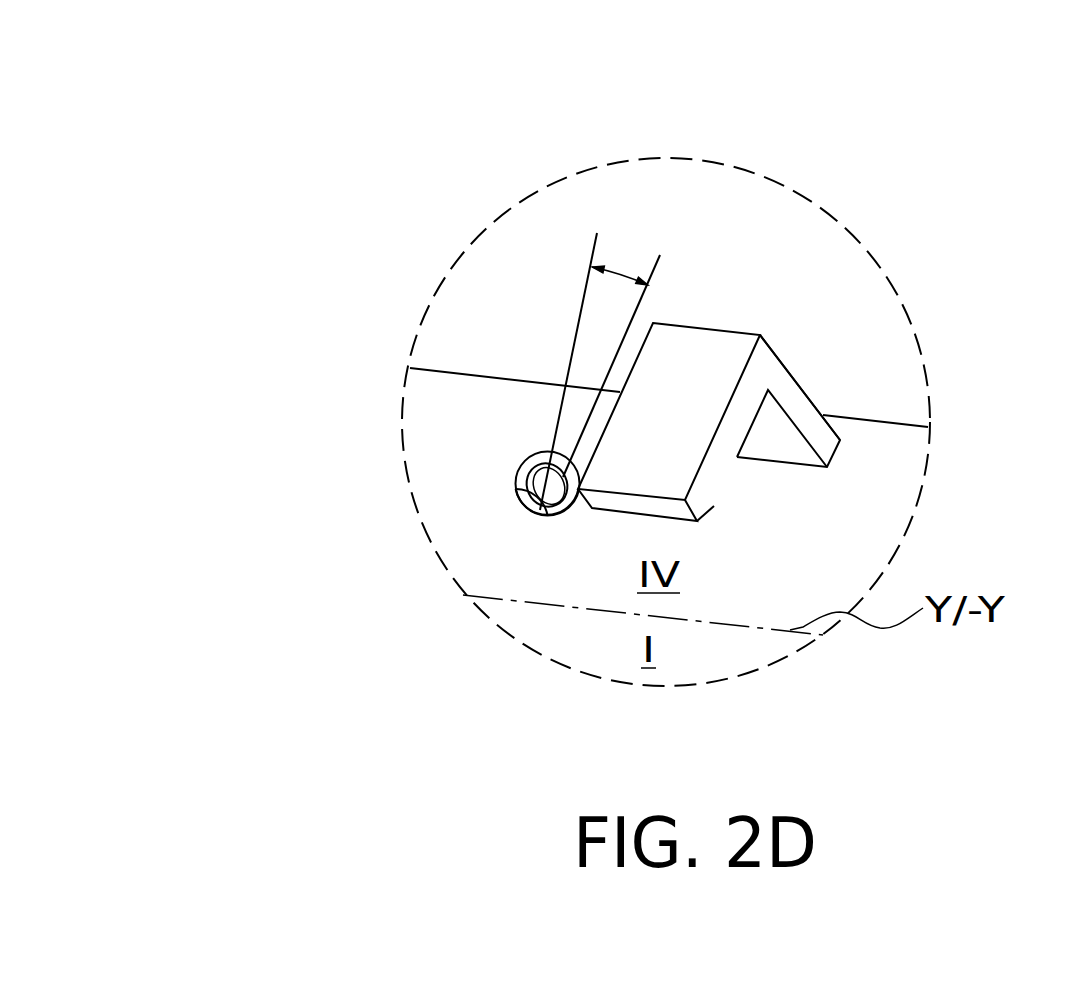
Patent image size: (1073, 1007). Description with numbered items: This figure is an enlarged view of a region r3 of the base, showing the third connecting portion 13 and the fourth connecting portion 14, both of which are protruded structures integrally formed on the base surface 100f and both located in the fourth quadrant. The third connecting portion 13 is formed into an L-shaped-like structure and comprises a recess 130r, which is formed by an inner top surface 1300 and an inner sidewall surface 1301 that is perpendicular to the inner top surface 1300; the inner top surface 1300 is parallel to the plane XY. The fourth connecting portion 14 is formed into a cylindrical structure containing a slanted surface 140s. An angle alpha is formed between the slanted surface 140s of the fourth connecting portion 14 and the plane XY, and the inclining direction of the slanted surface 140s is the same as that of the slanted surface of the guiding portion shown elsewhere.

The third connecting portion 13 is at (708, 327).
The inner sidewall surface 1301 is at (765, 428).
The recess 130r is at (750, 483).
The inner top surface 1300 is at (714, 506).
The fourth connecting portion 14 is at (520, 467).
The slanted surface 140s is at (517, 501).
The base surface 100f is at (428, 402).
The region r3 is at (315, 130).